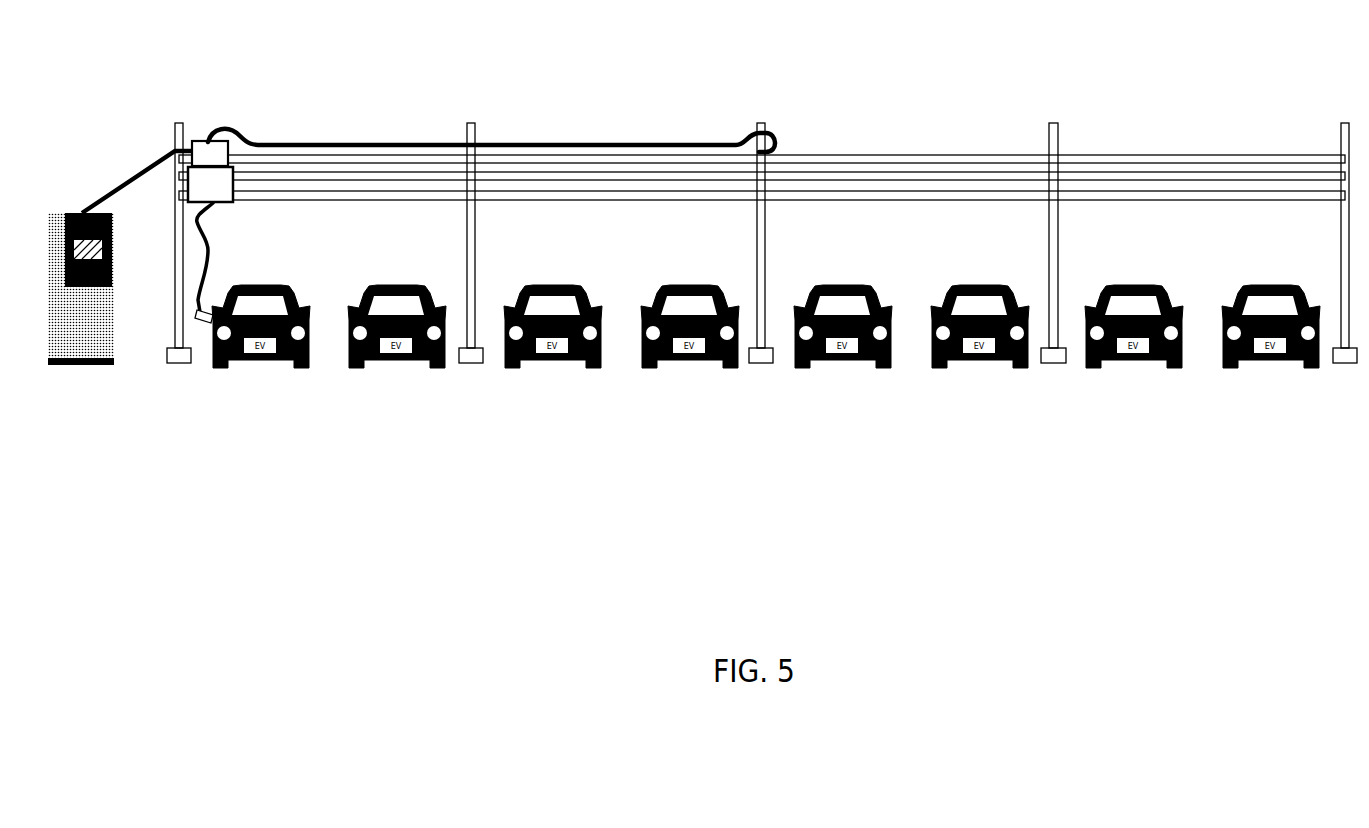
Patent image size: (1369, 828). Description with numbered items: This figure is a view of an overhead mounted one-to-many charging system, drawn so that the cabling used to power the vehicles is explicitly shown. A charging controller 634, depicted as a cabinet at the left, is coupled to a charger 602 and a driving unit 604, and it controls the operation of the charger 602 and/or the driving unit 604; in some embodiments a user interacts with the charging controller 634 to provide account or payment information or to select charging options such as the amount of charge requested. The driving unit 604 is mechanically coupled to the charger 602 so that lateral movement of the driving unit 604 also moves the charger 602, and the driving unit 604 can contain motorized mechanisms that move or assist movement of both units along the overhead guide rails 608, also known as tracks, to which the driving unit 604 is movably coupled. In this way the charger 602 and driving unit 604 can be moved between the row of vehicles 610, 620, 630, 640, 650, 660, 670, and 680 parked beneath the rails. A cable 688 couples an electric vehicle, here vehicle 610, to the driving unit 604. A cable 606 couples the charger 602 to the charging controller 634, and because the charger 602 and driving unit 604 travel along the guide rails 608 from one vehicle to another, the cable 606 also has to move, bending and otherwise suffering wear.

The charger 602 is at (211, 155).
The driving unit 604 is at (236, 182).
The cable 606 is at (688, 143).
The guide rails 608 is at (842, 173).
The vehicle 610 is at (272, 360).
The vehicle 620 is at (408, 360).
The vehicle 630 is at (564, 360).
The vehicle 640 is at (701, 360).
The vehicle 650 is at (854, 360).
The vehicle 660 is at (991, 360).
The vehicle 670 is at (1145, 360).
The vehicle 680 is at (1282, 360).
The charging controller 634 is at (77, 364).
The cable 688 is at (207, 260).